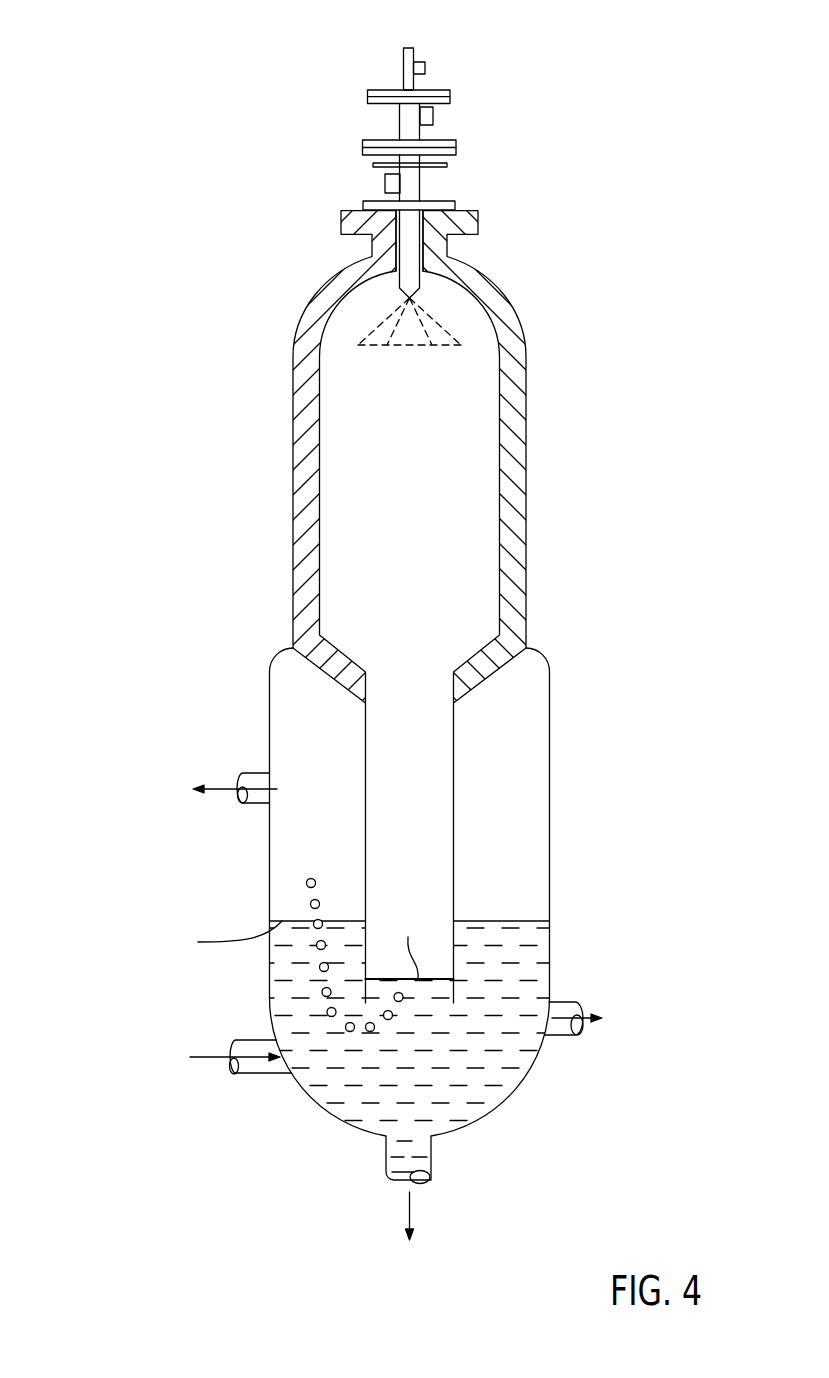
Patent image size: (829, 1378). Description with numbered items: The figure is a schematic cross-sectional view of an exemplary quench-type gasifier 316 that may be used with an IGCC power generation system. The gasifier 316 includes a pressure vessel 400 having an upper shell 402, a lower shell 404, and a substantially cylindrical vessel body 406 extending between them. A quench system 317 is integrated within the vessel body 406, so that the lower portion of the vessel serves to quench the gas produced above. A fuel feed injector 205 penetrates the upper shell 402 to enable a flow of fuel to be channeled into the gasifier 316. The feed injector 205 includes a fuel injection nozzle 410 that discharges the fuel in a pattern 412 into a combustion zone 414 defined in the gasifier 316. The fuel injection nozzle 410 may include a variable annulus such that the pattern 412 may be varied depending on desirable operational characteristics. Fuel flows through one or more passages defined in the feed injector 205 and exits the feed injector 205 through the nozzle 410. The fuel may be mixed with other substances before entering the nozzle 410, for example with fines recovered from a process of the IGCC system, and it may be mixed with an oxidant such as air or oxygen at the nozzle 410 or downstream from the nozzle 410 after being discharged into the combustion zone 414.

The fuel feed injector 205 is at (365, 45).
The quench-type gasifier 316 is at (237, 222).
The pressure vessel 400 is at (524, 266).
The upper shell 402 is at (513, 400).
The lower shell 404 is at (508, 1078).
The vessel body 406 is at (558, 673).
The quench system 317 is at (523, 817).
The fuel injection nozzle 410 is at (405, 240).
The pattern 412 is at (440, 325).
The combustion zone 414 is at (413, 407).